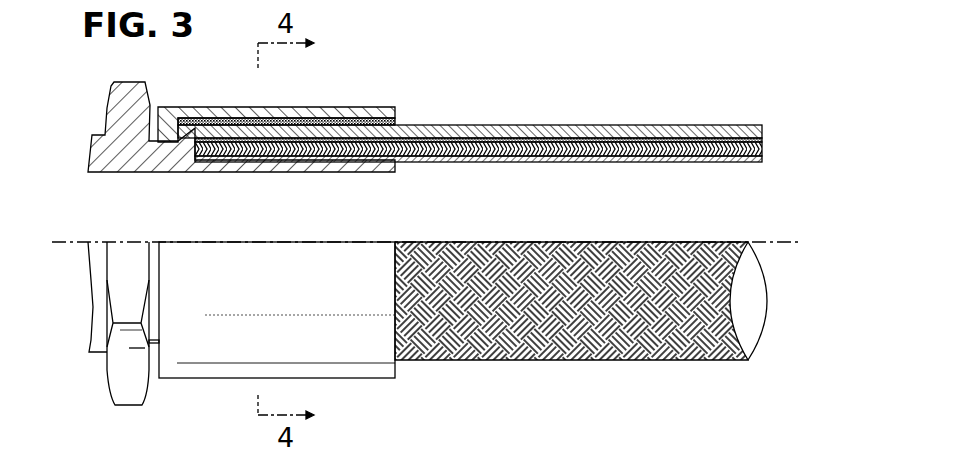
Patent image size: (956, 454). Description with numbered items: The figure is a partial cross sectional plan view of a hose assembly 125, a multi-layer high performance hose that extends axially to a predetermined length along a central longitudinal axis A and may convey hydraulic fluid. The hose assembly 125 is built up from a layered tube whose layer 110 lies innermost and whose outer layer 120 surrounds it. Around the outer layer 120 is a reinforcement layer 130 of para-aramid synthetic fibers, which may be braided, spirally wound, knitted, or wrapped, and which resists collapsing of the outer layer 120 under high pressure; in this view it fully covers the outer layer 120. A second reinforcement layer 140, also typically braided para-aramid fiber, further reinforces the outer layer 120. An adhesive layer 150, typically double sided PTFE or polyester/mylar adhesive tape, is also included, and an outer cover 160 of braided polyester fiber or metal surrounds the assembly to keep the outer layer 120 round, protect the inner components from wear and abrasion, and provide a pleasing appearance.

The layer 110 is at (763, 161).
The outer layer 120 is at (762, 148).
The hose assembly 125 is at (497, 183).
The reinforcement layer 130 is at (762, 138).
The second reinforcement layer 140 is at (667, 124).
The adhesive layer 150 is at (402, 120).
The outer cover 160 is at (285, 107).
The central longitudinal axis A is at (77, 242).